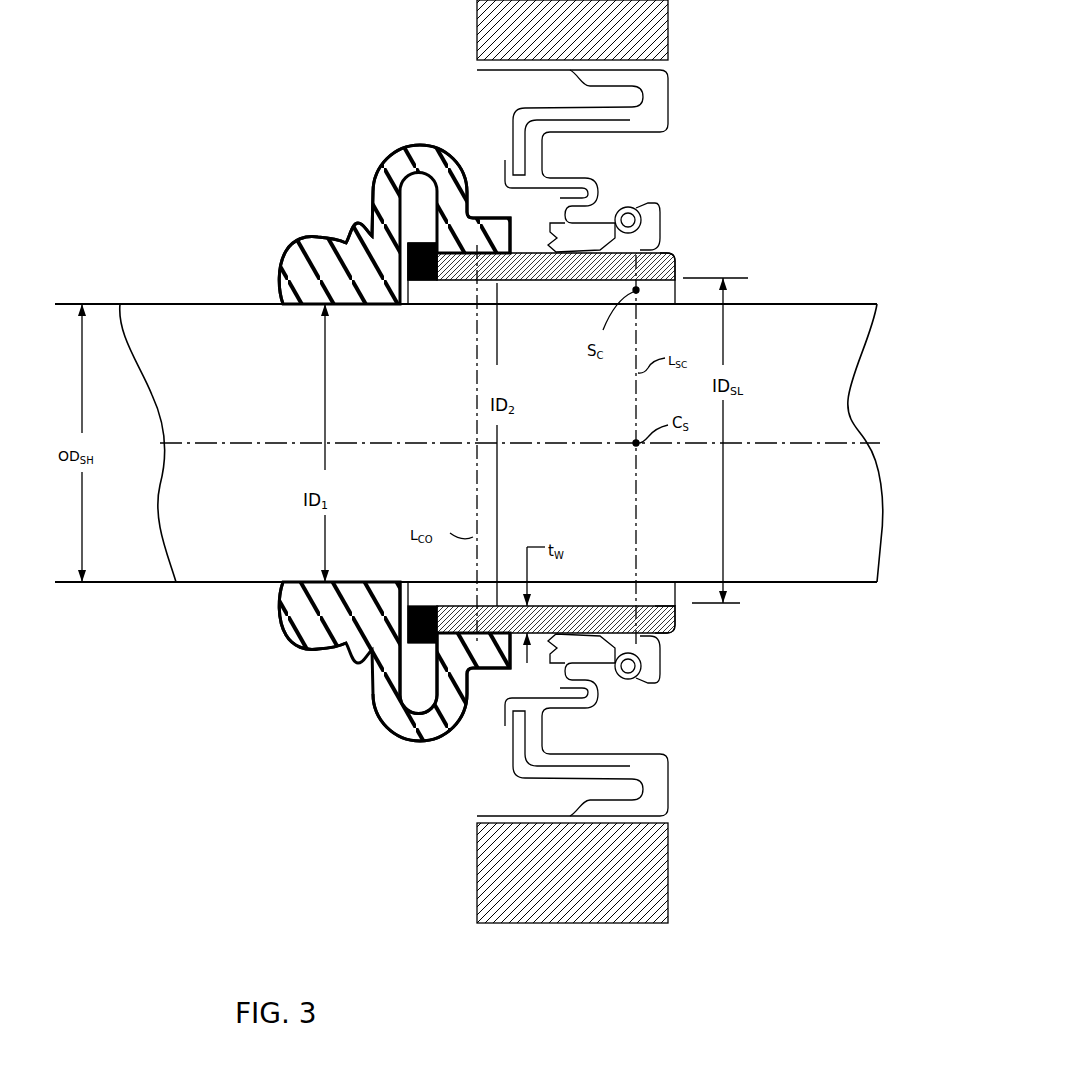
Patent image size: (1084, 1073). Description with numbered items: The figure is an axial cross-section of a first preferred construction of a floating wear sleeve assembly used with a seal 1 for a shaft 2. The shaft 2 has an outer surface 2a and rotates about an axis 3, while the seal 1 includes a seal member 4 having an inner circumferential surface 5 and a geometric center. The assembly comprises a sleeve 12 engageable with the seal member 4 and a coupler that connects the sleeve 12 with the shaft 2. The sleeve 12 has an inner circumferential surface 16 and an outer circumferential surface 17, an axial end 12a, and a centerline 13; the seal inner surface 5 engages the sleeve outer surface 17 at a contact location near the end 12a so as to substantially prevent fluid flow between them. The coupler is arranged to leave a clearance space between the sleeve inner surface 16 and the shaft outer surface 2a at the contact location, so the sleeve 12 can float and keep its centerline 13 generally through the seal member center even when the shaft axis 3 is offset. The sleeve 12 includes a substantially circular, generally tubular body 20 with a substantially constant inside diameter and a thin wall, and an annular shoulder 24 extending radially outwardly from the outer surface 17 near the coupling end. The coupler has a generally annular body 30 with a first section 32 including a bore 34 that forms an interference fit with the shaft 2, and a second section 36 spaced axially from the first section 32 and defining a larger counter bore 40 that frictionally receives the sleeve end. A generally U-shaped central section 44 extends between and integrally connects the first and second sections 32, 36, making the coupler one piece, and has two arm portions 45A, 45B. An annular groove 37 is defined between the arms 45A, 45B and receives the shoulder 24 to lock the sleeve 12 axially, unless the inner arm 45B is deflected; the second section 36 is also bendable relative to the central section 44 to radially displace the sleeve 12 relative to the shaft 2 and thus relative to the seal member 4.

The seal 1 is at (702, 146).
The shaft 2 is at (855, 614).
The outer surface 2a is at (823, 303).
The axis 3 is at (498, 443).
The centerline 13 is at (868, 442).
The seal member 4 is at (631, 428).
The inner circumferential surface 5 is at (637, 607).
The sleeve 12 is at (584, 470).
The axial end 12a is at (676, 268).
The inner circumferential surface 16 is at (588, 604).
The outer circumferential surface 17 is at (598, 250).
The tubular body 20 is at (534, 254).
The annular shoulder 24 is at (424, 652).
The annular body 30 is at (364, 442).
The first section 32 is at (287, 652).
The bore 34 is at (310, 306).
The second section 36 is at (492, 672).
The annular groove 37 is at (420, 738).
The bore 40 is at (513, 255).
The central section 44 is at (419, 141).
The arm portion 45A is at (382, 192).
The arm portion 45B is at (453, 200).